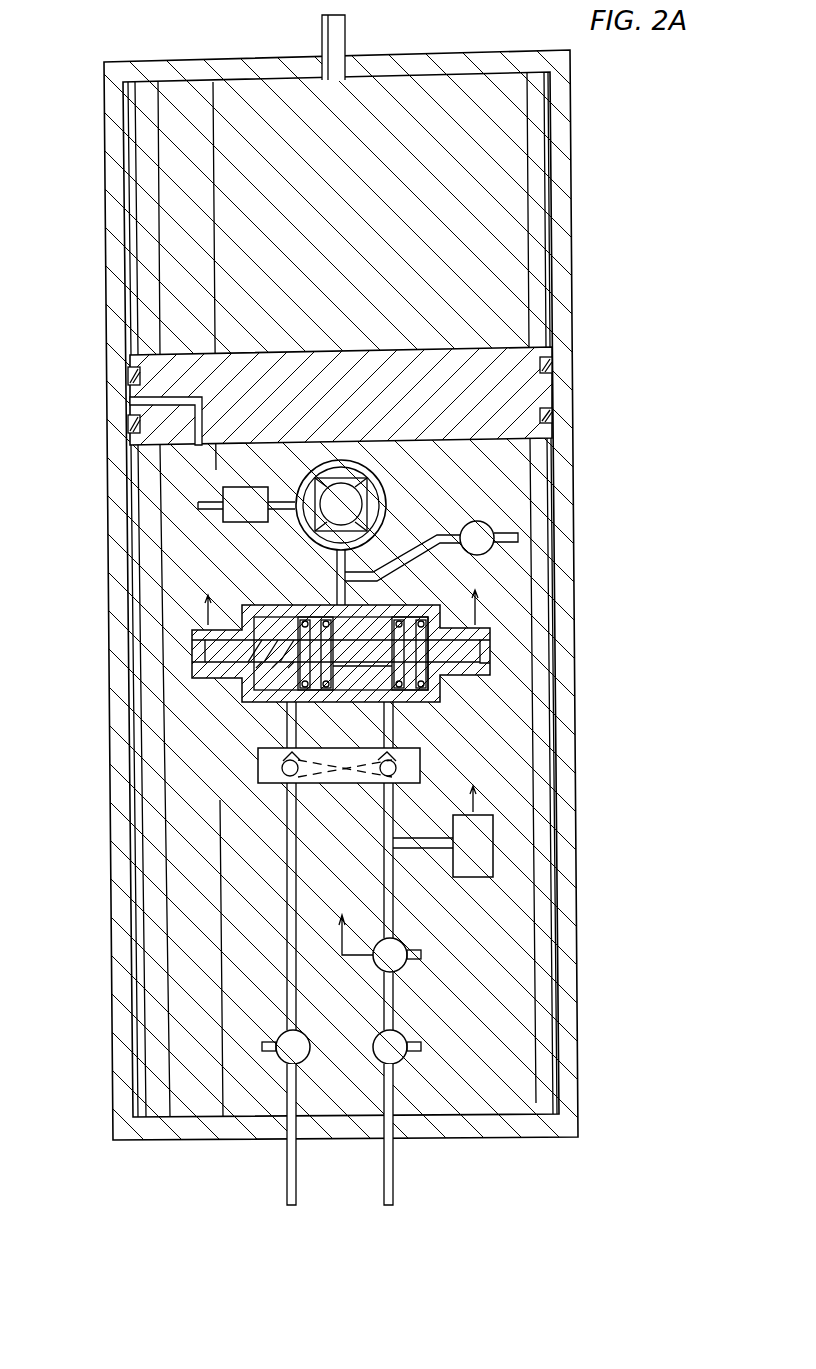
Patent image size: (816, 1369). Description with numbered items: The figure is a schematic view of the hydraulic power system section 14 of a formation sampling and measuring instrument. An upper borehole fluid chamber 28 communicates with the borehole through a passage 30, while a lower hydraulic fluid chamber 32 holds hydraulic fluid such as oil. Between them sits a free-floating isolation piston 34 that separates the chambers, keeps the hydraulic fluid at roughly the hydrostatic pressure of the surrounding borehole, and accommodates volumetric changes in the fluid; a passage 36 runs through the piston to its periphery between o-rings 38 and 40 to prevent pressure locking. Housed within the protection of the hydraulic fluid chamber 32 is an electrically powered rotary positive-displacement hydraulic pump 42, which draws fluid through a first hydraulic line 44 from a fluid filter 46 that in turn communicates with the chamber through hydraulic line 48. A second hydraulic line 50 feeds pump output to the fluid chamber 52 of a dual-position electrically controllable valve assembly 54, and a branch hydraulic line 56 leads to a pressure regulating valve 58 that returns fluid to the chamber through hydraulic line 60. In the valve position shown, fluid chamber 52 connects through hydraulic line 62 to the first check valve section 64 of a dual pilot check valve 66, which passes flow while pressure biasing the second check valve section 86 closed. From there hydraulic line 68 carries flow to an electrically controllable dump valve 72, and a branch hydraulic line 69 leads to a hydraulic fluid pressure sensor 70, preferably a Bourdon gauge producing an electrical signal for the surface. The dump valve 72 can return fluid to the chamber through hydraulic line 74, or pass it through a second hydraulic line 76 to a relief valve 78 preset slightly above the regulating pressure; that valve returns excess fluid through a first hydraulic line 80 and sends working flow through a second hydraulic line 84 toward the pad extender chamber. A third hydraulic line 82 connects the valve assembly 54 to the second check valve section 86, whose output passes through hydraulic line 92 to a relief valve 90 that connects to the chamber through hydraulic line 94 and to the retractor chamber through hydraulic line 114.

The hydraulic power system section 14 is at (647, 1003).
The upper borehole fluid chamber 28 is at (137, 200).
The passage 30 is at (350, 31).
The lower hydraulic fluid chamber 32 is at (553, 905).
The free-floating isolation piston 34 is at (508, 396).
The passage 36 is at (133, 401).
The o-ring 38 is at (128, 373).
The o-ring 40 is at (128, 428).
The hydraulic pump 42 is at (384, 481).
The first hydraulic line 44 is at (289, 512).
The fluid filter 46 is at (238, 524).
The hydraulic line 48 is at (200, 503).
The second hydraulic line 50 is at (336, 577).
The fluid chamber 52 is at (408, 684).
The valve assembly 54 is at (445, 697).
The hydraulic line 56 is at (419, 540).
The pressure regulating valve 58 is at (481, 521).
The hydraulic line 60 is at (520, 534).
The hydraulic line 62 is at (395, 725).
The first check valve section 64 is at (332, 780).
The dual pilot check valve 66 is at (341, 783).
The hydraulic line 68 is at (383, 860).
The branch hydraulic line 69 is at (420, 849).
The hydraulic fluid pressure sensor 70 is at (498, 832).
The dump valve 72 is at (403, 967).
The hydraulic line 74 is at (416, 946).
The second hydraulic line 76 is at (398, 1008).
The relief valve 78 is at (403, 1059).
The first hydraulic line 80 is at (413, 1036).
The third hydraulic line 82 is at (287, 725).
The second hydraulic line 84 is at (398, 1177).
The second check valve section 86 is at (258, 772).
The relief valve 90 is at (305, 1036).
The hydraulic line 92 is at (287, 880).
The hydraulic line 94 is at (265, 1040).
The hydraulic line 114 is at (287, 1176).